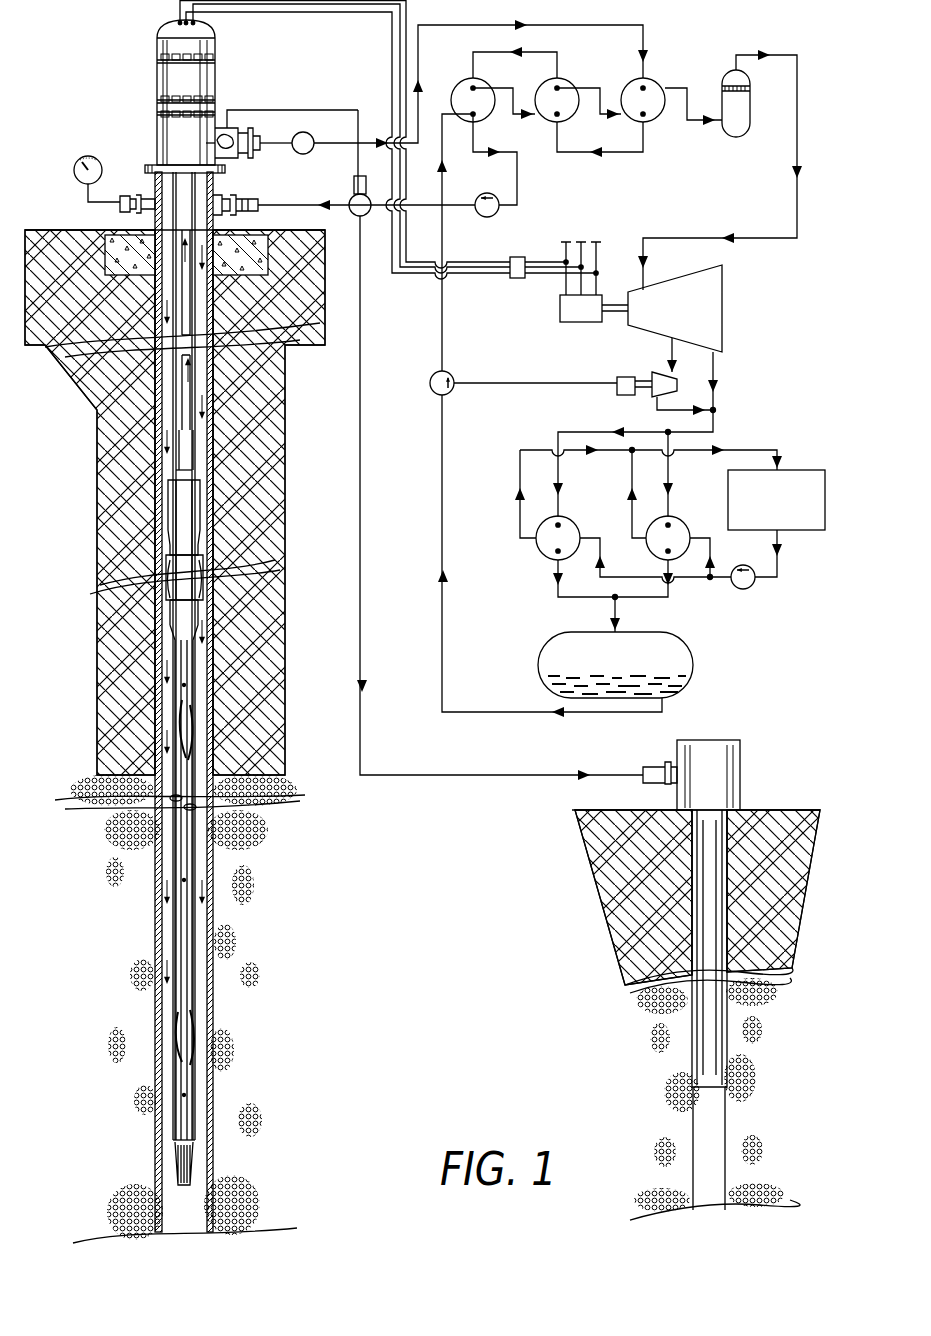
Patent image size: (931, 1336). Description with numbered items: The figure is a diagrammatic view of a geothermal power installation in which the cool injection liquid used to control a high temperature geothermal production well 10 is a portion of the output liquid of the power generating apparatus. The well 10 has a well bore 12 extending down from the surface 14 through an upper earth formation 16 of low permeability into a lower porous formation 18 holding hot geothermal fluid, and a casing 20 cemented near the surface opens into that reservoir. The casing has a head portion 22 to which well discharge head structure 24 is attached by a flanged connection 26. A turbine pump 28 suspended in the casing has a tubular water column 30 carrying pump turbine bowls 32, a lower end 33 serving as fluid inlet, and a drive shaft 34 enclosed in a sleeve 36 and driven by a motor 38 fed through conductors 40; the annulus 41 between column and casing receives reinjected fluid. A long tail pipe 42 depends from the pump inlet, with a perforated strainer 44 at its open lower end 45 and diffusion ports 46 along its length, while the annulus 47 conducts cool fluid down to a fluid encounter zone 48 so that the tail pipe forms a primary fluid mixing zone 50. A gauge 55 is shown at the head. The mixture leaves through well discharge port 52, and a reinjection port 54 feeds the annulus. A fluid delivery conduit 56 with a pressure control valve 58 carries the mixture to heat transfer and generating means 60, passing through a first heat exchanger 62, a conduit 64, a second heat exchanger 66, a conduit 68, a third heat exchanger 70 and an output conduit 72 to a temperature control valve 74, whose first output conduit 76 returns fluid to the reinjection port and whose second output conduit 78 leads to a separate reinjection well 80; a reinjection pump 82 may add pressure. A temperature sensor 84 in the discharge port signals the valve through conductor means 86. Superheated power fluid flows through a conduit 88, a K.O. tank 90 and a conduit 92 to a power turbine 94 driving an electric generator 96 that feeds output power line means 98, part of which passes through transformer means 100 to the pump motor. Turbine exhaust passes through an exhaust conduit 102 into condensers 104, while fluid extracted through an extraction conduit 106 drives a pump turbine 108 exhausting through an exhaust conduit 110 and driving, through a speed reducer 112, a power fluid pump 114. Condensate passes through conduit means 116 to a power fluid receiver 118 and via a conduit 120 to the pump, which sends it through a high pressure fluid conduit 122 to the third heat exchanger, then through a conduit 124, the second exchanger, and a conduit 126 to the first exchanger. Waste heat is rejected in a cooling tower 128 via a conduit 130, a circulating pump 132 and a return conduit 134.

The high temperature geothermal production well 10 is at (105, 132).
The well bore 12 is at (170, 390).
The surface 14 is at (36, 232).
The upper earth formation 16 is at (140, 497).
The lower porous formation 18 is at (125, 1205).
The casing 20 is at (220, 396).
The head portion 22 is at (150, 221).
The well discharge head structure 24 is at (175, 132).
The flanged connection 26 is at (155, 166).
The turbine pump 28 is at (206, 492).
The tubular water column 30 is at (170, 422).
The pump turbine bowls 32 is at (180, 570).
The lower end of the pump 33 is at (170, 665).
The drive shaft 34 is at (160, 350).
The sleeve 36 is at (185, 318).
The motor 38 is at (208, 80).
The conductors 40 is at (303, 14).
The annulus 41 is at (200, 440).
The long tail pipe 42 is at (206, 852).
The perforated liner or strainer 44 is at (178, 1172).
The open lower end of long tail pipe 45 is at (178, 1142).
The diffusion ports 46 is at (185, 948).
The annulus 47 is at (165, 845).
The fluid encounter zone 48 is at (206, 1140).
The primary fluid mixing zone 50 is at (200, 722).
The well discharge port 52 is at (235, 160).
The reinjection port 54 is at (232, 193).
The pressure gauge 55 is at (127, 193).
The fluid delivery conduit 56 is at (358, 112).
The pressure control valve 58 is at (303, 132).
The heat transfer and generating means 60 is at (665, 50).
The first heat exchanger 62 is at (628, 86).
The conduit 64 is at (613, 156).
The second heat exchanger 66 is at (550, 86).
The conduit 68 is at (492, 52).
The third heat exchanger 70 is at (464, 86).
The output conduit 72 is at (522, 177).
The temperature control valve 74 is at (350, 197).
The first output conduit 76 is at (278, 204).
The second output conduit 78 is at (366, 545).
The reinjection well 80 is at (748, 796).
The reinjection pump 82 is at (498, 212).
The temperature sensor 84 is at (245, 126).
The temperature sensing signal conductor means 86 is at (228, 110).
The conduit 88 is at (686, 90).
The K.O. tank 90 is at (750, 120).
The conduit 92 is at (796, 186).
The power turbine 94 is at (724, 288).
The electric power generator 96 is at (560, 308).
The output power line means 98 is at (600, 250).
The transformer means 100 is at (523, 257).
The exhaust conduit 102 is at (718, 360).
The condensers 104 is at (540, 550).
The extraction conduit 106 is at (670, 356).
The power fluid pump turbine 108 is at (646, 396).
The exhaust conduit 110 is at (682, 392).
The speed reducer 112 is at (622, 376).
The power fluid pump 114 is at (455, 375).
The conduit means 116 is at (619, 606).
The power fluid receiver 118 is at (696, 658).
The conduit 120 is at (445, 628).
The high pressure fluid conduit 122 is at (446, 313).
The conduit 124 is at (507, 114).
The conduit 126 is at (595, 114).
The cooling tower 128 is at (790, 469).
The conduit 130 is at (780, 573).
The circulating pump 132 is at (742, 590).
The return conduit 134 is at (744, 448).